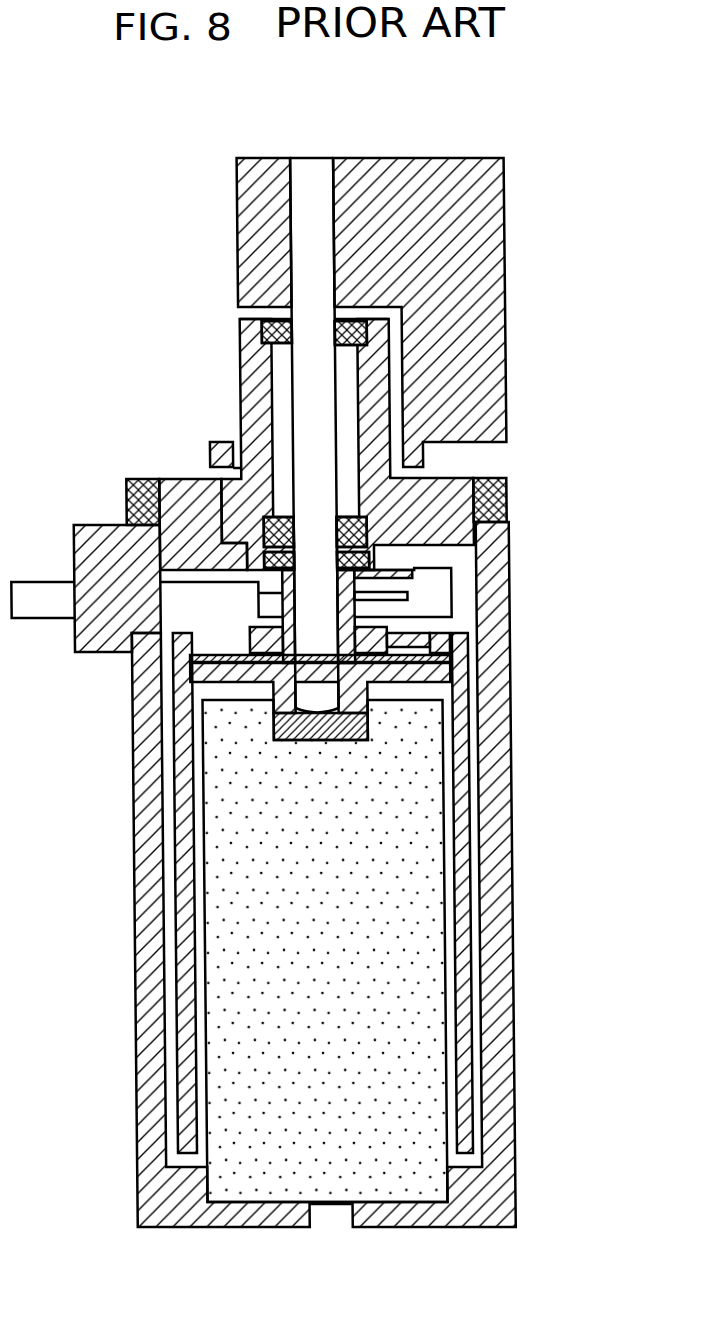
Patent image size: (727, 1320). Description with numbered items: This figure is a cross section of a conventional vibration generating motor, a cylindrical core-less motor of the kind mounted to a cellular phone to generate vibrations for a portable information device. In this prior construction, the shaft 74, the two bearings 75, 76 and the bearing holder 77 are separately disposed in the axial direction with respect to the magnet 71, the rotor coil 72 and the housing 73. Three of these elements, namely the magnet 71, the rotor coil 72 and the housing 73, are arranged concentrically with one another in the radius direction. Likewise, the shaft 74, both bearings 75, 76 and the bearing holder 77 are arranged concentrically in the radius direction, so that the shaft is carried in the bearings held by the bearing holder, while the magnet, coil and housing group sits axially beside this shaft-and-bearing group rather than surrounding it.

The magnet 71 is at (254, 1060).
The rotor coil 72 is at (468, 828).
The housing 73 is at (505, 992).
The shaft 74 is at (307, 177).
The bearing 75 is at (349, 532).
The bearing 76 is at (259, 325).
The bearing holder 77 is at (249, 388).